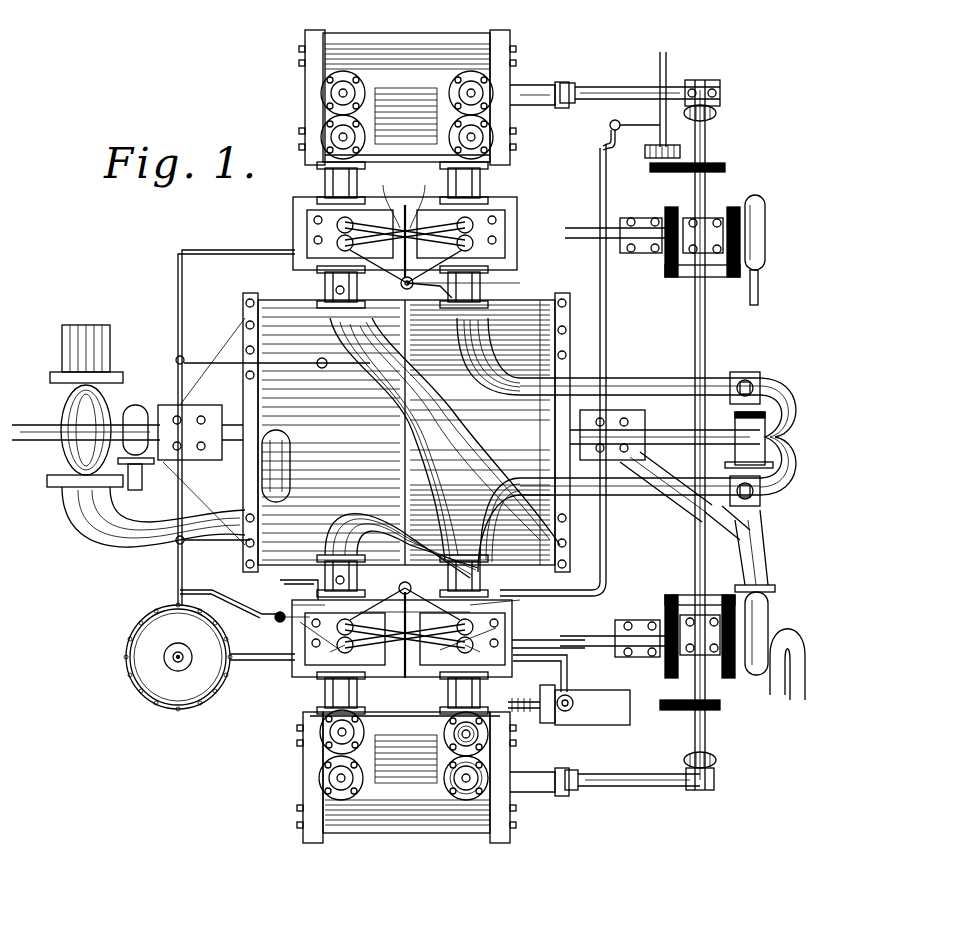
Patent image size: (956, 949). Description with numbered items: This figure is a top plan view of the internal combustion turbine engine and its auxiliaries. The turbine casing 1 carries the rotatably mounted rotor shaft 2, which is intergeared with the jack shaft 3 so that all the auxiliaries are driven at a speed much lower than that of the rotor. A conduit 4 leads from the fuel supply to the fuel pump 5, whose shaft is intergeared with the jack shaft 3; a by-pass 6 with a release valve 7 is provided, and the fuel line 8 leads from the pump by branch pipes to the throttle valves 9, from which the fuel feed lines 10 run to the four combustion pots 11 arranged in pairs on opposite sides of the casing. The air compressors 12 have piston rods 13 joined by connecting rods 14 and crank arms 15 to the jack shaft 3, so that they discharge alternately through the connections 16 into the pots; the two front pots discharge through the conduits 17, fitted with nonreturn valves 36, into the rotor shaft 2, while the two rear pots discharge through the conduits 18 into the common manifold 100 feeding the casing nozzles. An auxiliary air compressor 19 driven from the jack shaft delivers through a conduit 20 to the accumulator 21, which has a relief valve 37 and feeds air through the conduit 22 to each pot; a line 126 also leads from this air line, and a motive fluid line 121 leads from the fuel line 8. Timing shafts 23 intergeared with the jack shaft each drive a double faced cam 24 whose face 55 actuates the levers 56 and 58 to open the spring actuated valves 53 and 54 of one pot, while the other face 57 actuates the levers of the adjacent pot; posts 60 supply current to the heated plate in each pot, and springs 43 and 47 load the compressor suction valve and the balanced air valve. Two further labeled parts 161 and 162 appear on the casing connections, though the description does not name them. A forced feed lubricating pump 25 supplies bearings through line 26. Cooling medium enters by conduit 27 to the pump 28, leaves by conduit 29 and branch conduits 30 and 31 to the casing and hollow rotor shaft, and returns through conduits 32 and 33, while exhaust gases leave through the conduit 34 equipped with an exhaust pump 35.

The turbine casing 1 is at (406, 432).
The rotor shaft 2 is at (30, 442).
The jack shaft 3 is at (694, 318).
The conduit 4 is at (668, 62).
The fuel pump 5 is at (652, 155).
The by-pass 6 is at (609, 138).
The release valve 7 is at (610, 125).
The fuel line 8 is at (608, 312).
The throttle valves 9 is at (455, 318).
The fuel feed lines 10 is at (401, 606).
The combustion pots 11 is at (310, 220).
The air compressors 12 is at (403, 70).
The piston rods 13 is at (626, 86).
The connecting rods 14 is at (708, 790).
The crank arms 15 is at (716, 114).
The connections 16 is at (322, 180).
The conduits 17 is at (632, 378).
The conduits 18 is at (418, 410).
The auxiliary air compressor 19 is at (622, 726).
The conduit 20 is at (252, 662).
The accumulator 21 is at (172, 688).
The conduit 22 is at (248, 252).
The timing shafts 23 is at (594, 232).
The double faced cam 24 is at (405, 203).
The forced feed lubricating pump 25 is at (765, 218).
The line 26 is at (760, 298).
The conduit 27 is at (788, 692).
The pump 28 is at (755, 670).
The conduit 29 is at (766, 560).
The branch conduit 30 is at (668, 498).
The branch conduit 31 is at (750, 530).
The conduit 32 is at (268, 470).
The conduit 33 is at (136, 420).
The conduit 34 is at (90, 518).
The exhaust pump 35 is at (80, 425).
The nonreturn valves 36 is at (746, 372).
The relief valve 37 is at (185, 668).
The spring 43 is at (468, 792).
The spring 47 is at (470, 734).
The spring actuated valve 53 is at (308, 672).
The spring actuated valve 54 is at (278, 617).
The cam face 55 is at (384, 197).
The lever 56 is at (405, 660).
The cam face 57 is at (423, 197).
The lever 58 is at (414, 635).
The posts 60 is at (314, 240).
The common manifold 100 is at (505, 432).
The motive fluid line 121 is at (522, 283).
The line 126 is at (278, 582).
The bolt 161 is at (334, 290).
The bolt 162 is at (282, 366).